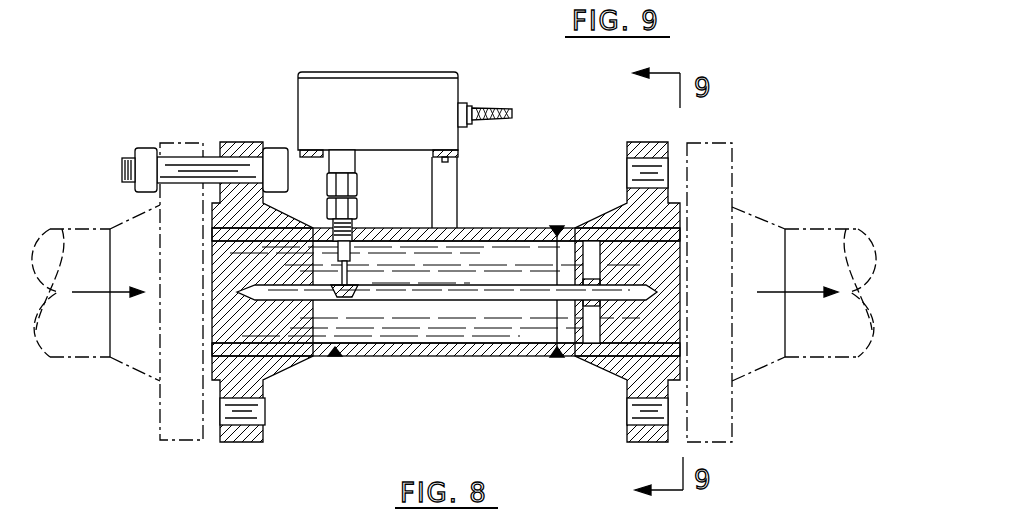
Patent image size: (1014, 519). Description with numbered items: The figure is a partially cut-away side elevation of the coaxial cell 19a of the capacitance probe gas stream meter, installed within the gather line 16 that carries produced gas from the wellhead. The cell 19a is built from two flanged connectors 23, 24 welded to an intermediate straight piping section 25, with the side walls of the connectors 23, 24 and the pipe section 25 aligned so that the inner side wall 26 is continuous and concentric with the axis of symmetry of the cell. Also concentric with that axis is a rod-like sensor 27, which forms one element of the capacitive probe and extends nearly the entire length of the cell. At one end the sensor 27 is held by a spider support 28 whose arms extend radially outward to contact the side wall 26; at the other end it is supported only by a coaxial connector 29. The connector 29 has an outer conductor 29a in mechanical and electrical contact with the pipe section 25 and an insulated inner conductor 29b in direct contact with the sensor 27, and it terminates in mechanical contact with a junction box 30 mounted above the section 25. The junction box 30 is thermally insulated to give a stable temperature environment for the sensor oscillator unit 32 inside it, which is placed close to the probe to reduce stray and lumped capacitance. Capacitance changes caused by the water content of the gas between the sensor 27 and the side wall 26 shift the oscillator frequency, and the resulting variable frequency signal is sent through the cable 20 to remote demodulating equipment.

The gather line 16 is at (85, 227).
The coaxial cell 19a is at (439, 208).
The junction box 30 is at (368, 72).
The sensor oscillator unit 32 is at (391, 100).
The cable 20 is at (497, 106).
The coaxial connector 29 is at (357, 184).
The outer conductor 29a is at (355, 225).
The insulated inner conductor 29b is at (343, 276).
The inner side wall 26 is at (507, 228).
The intermediate straight piping section 25 is at (400, 363).
The spider support 28 is at (592, 255).
The rod-like sensor 27 is at (507, 292).
The flanged connector 23 is at (285, 365).
The flanged connector 24 is at (607, 370).